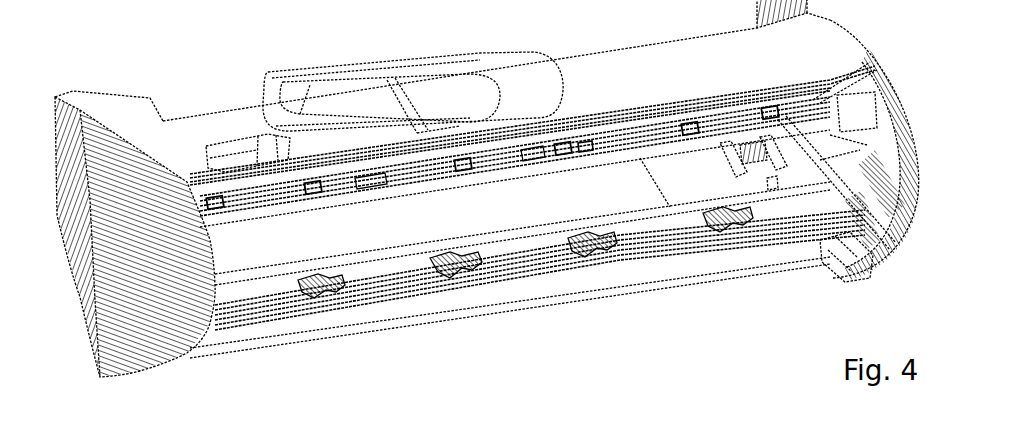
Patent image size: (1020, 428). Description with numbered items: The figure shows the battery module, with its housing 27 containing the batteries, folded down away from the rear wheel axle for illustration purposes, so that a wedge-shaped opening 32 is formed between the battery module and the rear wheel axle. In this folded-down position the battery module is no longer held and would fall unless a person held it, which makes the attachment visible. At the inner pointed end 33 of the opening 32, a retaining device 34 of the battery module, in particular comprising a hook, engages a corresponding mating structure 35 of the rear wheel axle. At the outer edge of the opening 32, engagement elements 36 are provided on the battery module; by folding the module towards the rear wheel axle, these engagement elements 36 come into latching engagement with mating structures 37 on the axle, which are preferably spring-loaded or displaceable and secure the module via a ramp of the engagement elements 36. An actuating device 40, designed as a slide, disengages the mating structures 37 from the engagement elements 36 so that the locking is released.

The housing 27 is at (413, 66).
The opening 32 is at (690, 203).
The inner end 33 is at (395, 183).
The retaining device 34 is at (565, 154).
The mating structure 35 is at (583, 152).
The engagement element 36 is at (460, 268).
The mating structure 37 is at (322, 160).
The actuating device 40 is at (230, 147).